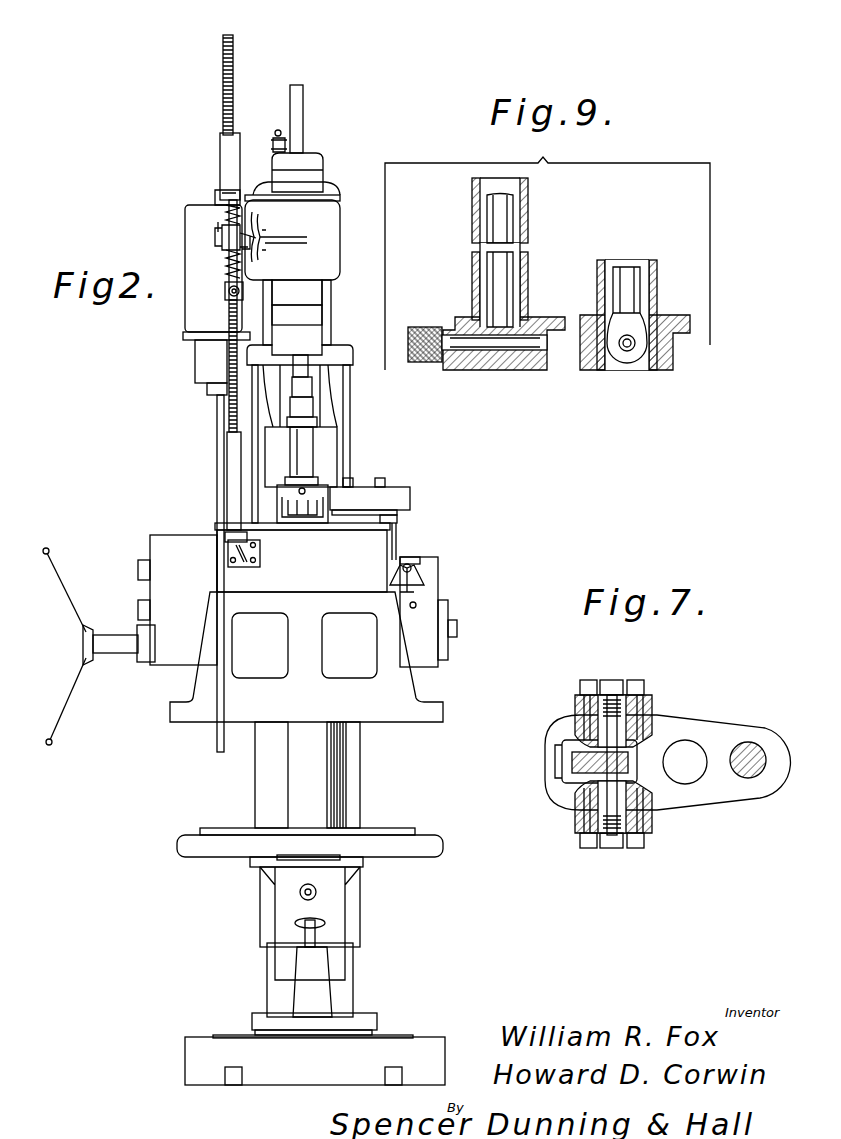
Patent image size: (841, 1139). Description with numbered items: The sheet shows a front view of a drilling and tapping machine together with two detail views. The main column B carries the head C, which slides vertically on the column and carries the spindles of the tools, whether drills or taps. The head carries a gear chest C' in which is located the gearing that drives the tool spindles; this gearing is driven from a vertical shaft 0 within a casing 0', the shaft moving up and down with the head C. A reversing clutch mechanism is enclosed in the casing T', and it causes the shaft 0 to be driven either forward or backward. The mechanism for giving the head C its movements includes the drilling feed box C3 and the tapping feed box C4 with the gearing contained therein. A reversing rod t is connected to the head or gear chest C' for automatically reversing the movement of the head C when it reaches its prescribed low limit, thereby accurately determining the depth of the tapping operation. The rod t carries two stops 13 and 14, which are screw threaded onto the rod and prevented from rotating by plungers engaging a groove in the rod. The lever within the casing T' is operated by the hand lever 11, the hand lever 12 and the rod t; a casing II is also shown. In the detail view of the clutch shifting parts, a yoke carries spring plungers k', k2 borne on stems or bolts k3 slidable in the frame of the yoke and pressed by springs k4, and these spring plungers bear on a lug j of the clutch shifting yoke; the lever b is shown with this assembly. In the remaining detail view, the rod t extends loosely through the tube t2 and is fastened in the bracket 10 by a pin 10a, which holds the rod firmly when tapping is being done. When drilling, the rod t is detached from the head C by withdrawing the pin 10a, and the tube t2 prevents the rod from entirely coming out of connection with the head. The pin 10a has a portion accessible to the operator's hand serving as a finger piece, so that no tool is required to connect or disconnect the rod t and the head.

In FIG. 2, the reversing rod t is at (233, 85).
In FIG. 9, the reversing rod t is at (500, 280).
In FIG. 2, the tube t2 is at (233, 488).
In FIG. 9, the tube t2 is at (529, 217).
In FIG. 2, the stop 13 is at (225, 168).
In FIG. 2, the vertical shaft 0 is at (310, 119).
In FIG. 2, the casing T' is at (305, 216).
In FIG. 2, the casing II is at (195, 315).
In FIG. 2, the hand lever 12 is at (222, 242).
In FIG. 2, the hand lever 11 is at (257, 258).
In FIG. 2, the stop 14 is at (243, 292).
In FIG. 2, the casing 0' is at (333, 439).
In FIG. 2, the bracket 10 is at (230, 538).
In FIG. 9, the bracket 10 is at (457, 367).
In FIG. 9, the pin 10a is at (505, 350).
In FIG. 2, the gear chest C' is at (302, 561).
In FIG. 2, the drilling feed box C3 is at (178, 650).
In FIG. 2, the tapping feed box C4 is at (432, 648).
In FIG. 2, the head C is at (317, 657).
In FIG. 2, the main column B is at (315, 1020).
In FIG. 7, the lever arm b is at (732, 728).
In FIG. 7, the lug j is at (572, 767).
In FIG. 7, the spring plunger k' is at (615, 768).
In FIG. 7, the spring plunger k2 is at (620, 750).
In FIG. 7, the stem or bolt k3 is at (613, 697).
In FIG. 7, the spring k4 is at (637, 708).